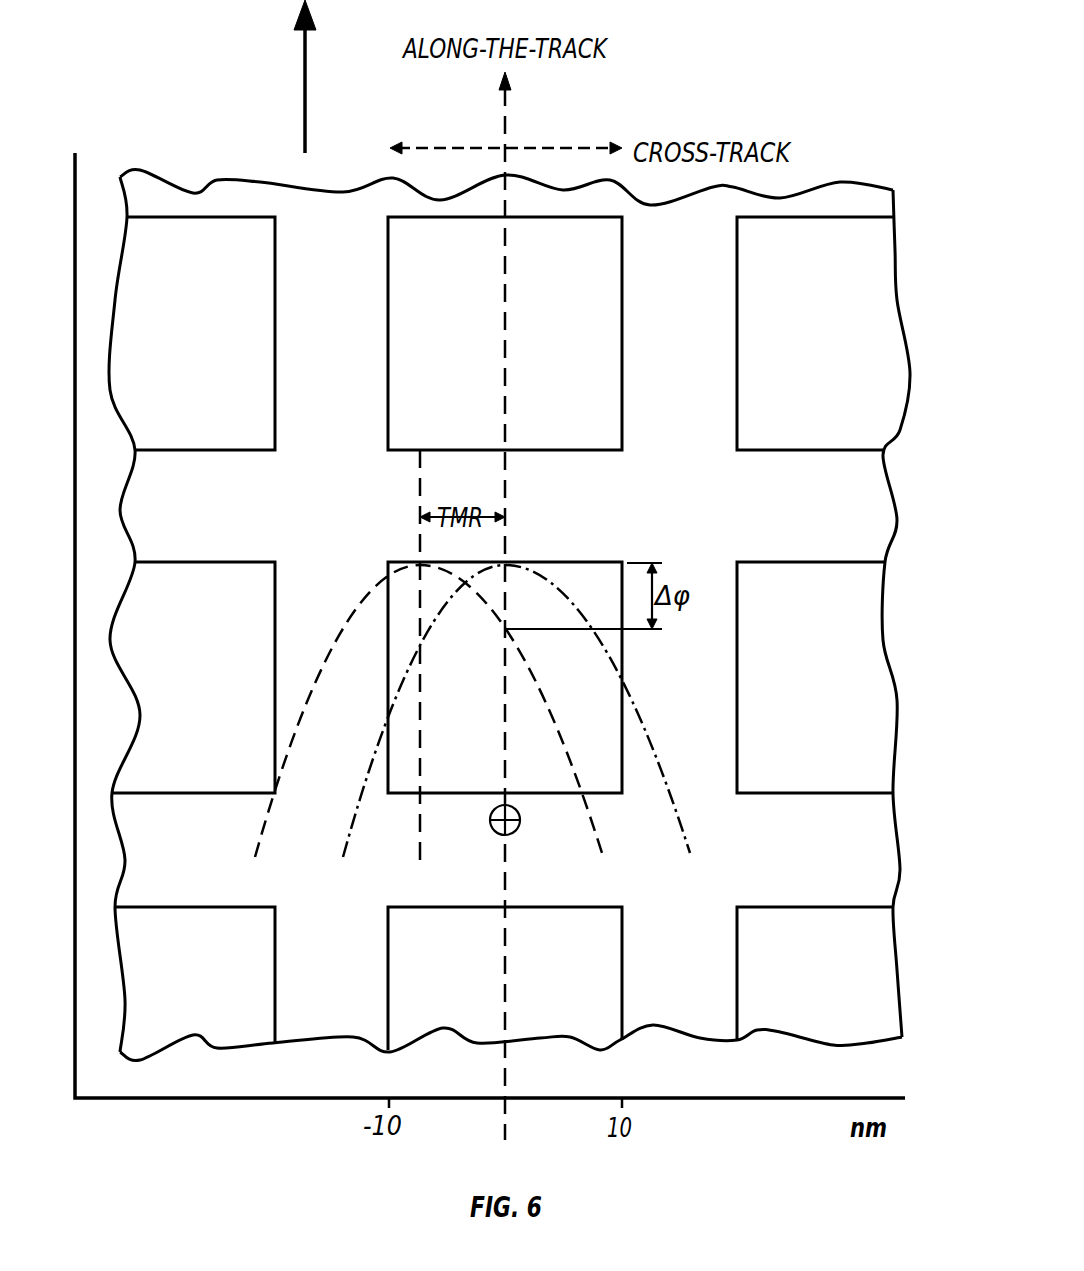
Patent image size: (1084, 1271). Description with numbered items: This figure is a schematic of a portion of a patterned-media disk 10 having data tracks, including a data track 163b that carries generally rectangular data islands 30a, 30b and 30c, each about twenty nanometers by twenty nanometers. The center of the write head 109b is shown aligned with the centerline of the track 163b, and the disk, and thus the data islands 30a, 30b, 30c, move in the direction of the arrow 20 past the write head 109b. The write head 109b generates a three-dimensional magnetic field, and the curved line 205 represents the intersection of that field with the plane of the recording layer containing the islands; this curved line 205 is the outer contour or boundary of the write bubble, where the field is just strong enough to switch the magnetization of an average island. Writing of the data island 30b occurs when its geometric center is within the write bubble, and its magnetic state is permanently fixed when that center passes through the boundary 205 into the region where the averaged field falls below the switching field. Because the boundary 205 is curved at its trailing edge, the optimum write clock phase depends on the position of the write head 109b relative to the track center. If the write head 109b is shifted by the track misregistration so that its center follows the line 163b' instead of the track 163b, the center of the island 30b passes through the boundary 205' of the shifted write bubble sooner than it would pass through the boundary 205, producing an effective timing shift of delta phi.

The patterned-media disk 10 is at (855, 180).
The arrow 20 is at (302, 97).
The data track 163b is at (460, 606).
The shifted write head centerline 163b' is at (372, 659).
The data island 30a is at (615, 945).
The data island 30b is at (410, 787).
The data island 30c is at (615, 313).
The curved line (write bubble boundary) 205 is at (516, 711).
The write bubble boundary of the shifted write head 205' is at (428, 711).
The write head 109b is at (508, 836).